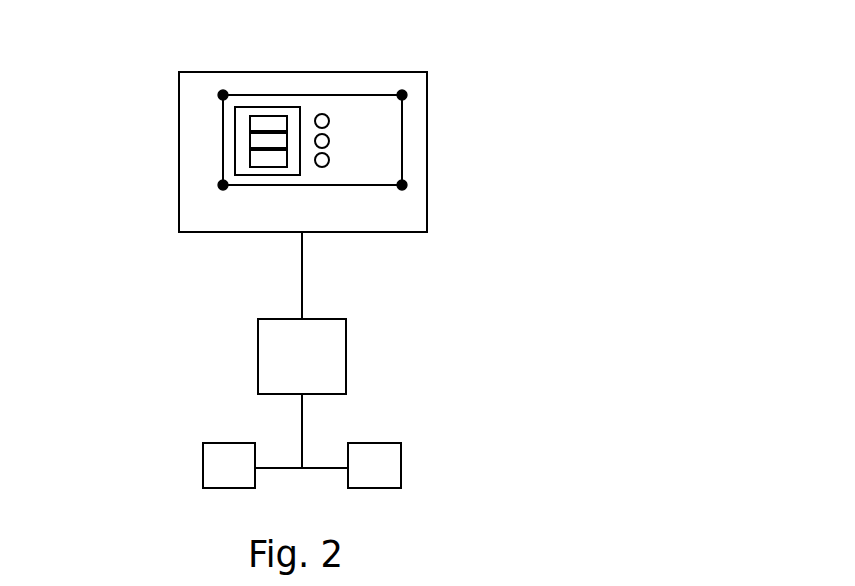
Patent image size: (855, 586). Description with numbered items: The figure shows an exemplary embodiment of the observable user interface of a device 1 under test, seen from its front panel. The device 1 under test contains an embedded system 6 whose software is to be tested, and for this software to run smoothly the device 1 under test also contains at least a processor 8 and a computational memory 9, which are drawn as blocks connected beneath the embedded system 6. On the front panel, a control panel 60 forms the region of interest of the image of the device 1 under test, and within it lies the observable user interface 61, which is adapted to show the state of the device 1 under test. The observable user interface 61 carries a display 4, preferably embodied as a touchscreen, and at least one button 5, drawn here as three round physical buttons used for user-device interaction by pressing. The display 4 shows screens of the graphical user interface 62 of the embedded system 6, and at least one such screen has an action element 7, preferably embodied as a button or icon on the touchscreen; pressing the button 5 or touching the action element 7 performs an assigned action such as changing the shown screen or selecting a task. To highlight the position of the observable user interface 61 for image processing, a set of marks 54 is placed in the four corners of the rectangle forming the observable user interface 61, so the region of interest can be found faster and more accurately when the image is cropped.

The device under test 1 is at (179, 232).
The display 4 is at (209, 137).
The button 5 is at (322, 112).
The embedded system 6 is at (346, 363).
The action element 7 is at (250, 165).
The processor 8 is at (203, 469).
The computational memory 9 is at (400, 468).
The marks 54 is at (223, 95).
The control panel 60 is at (410, 155).
The observable user interface 61 is at (245, 95).
The graphical user interface 62 is at (203, 174).